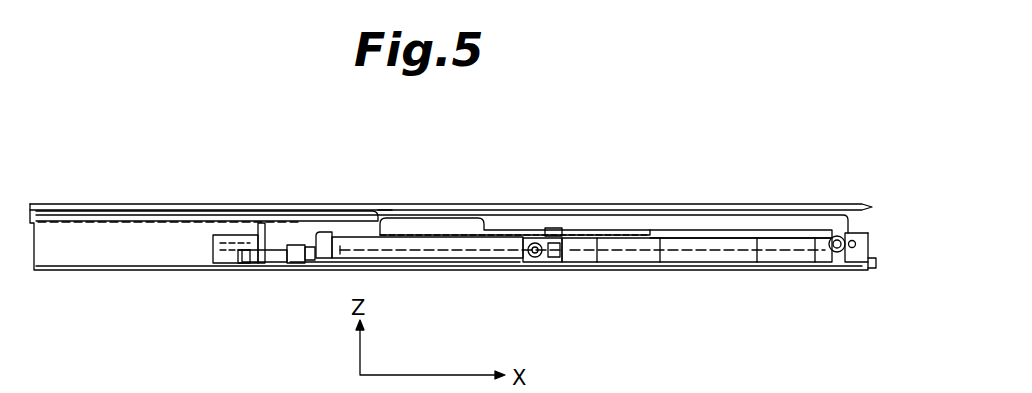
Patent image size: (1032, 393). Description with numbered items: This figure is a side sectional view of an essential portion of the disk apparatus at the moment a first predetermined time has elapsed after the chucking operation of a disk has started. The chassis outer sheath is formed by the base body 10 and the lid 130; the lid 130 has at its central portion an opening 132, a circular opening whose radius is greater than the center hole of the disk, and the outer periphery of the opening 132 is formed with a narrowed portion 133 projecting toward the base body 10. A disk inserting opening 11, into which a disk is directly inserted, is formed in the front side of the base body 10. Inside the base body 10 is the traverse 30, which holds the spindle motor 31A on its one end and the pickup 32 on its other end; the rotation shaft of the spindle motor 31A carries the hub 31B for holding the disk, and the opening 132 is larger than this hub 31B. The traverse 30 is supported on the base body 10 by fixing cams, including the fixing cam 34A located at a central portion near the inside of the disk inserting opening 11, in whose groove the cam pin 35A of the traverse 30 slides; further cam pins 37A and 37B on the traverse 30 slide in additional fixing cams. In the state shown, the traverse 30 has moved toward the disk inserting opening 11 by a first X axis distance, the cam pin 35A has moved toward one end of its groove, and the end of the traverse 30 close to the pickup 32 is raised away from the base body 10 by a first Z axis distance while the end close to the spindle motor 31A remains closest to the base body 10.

The base body 10 is at (304, 267).
The disk inserting opening 11 is at (862, 215).
The traverse 30 is at (688, 262).
The spindle motor 31A is at (410, 258).
The hub 31B is at (440, 212).
The pickup 32 is at (720, 230).
The fixing cam 34A is at (851, 248).
The cam pin 35A is at (831, 252).
The cam pin 37A is at (537, 262).
The cam pin 37B is at (553, 226).
The lid 130 is at (230, 205).
The opening 132 is at (403, 198).
The narrowed portion 133 is at (366, 206).